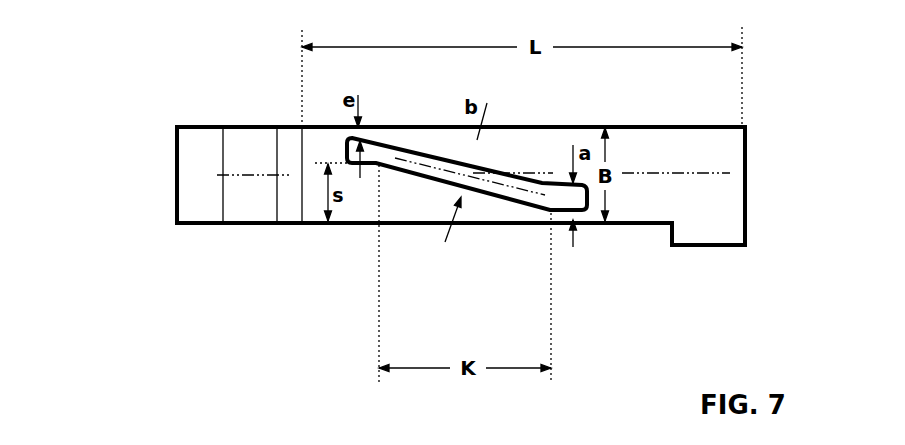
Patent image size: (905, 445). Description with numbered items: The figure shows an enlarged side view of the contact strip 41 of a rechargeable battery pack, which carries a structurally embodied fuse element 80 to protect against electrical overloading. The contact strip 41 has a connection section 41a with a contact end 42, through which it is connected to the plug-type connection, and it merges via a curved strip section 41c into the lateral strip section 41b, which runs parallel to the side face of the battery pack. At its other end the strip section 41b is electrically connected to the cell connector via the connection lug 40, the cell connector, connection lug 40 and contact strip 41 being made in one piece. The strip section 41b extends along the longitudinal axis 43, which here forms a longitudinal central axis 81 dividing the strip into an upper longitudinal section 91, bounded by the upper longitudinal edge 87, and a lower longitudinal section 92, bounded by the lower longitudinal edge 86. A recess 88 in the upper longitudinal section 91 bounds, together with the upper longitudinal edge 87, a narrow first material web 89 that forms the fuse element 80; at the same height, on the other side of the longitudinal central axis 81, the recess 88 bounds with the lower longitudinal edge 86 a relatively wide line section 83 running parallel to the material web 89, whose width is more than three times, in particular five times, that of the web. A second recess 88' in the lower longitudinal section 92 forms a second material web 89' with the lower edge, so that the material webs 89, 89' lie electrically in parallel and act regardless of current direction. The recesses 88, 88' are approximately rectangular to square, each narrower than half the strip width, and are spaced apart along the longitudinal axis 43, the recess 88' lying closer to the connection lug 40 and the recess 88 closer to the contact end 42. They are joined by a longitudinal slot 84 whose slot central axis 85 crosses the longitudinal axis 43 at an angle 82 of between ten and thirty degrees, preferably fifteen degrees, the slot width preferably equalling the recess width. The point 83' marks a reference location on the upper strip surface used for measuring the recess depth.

The connection lug 40 is at (703, 233).
The contact strip 41 is at (257, 225).
The connection section 41a is at (177, 180).
The lateral strip section 41b is at (473, 212).
The curved strip section 41c is at (197, 195).
The contact end 42 is at (152, 162).
The longitudinal axis 43 is at (258, 177).
The fuse element 80 is at (333, 136).
The longitudinal central axis 81 is at (663, 173).
The angle 82 is at (493, 172).
The line section 83 is at (339, 261).
The upper surface point 83' is at (578, 109).
The longitudinal slot 84 is at (500, 170).
The slot central axis 85 is at (418, 163).
The lower longitudinal edge 86 is at (309, 236).
The upper longitudinal edge 87 is at (666, 117).
The recess 88 is at (362, 242).
The recess 88' is at (601, 267).
The material web 89 is at (383, 99).
The material web 89' is at (568, 272).
The upper longitudinal section 91 is at (728, 156).
The lower longitudinal section 92 is at (725, 203).